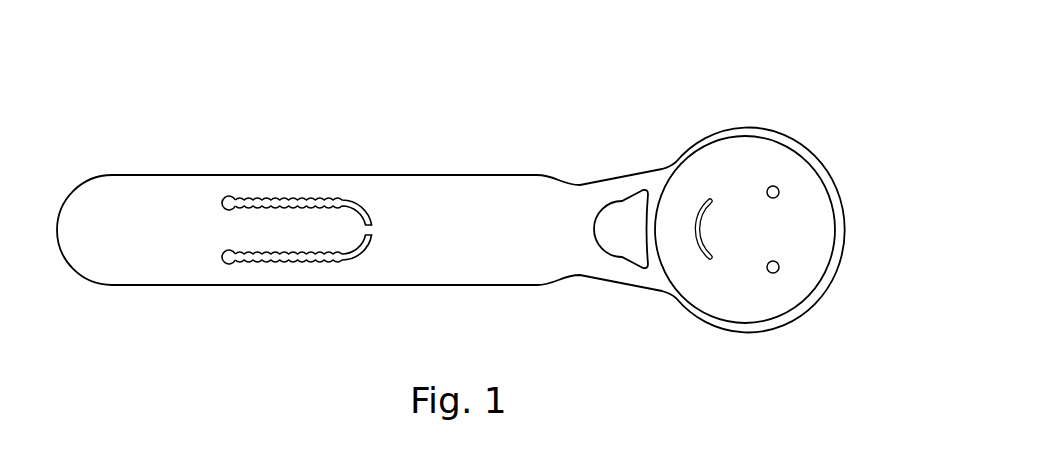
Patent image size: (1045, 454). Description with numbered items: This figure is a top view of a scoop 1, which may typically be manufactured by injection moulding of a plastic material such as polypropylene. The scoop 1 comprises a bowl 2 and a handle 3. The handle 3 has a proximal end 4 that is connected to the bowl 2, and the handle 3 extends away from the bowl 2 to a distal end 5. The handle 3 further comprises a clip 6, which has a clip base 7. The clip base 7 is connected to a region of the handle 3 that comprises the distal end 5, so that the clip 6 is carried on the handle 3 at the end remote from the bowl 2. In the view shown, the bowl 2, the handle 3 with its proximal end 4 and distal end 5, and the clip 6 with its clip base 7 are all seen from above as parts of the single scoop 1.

The scoop 1 is at (652, 77).
The bowl 2 is at (727, 273).
The handle 3 is at (442, 215).
The proximal end 4 is at (601, 166).
The distal end 5 is at (80, 172).
The clip 6 is at (302, 228).
The clip base 7 is at (233, 230).